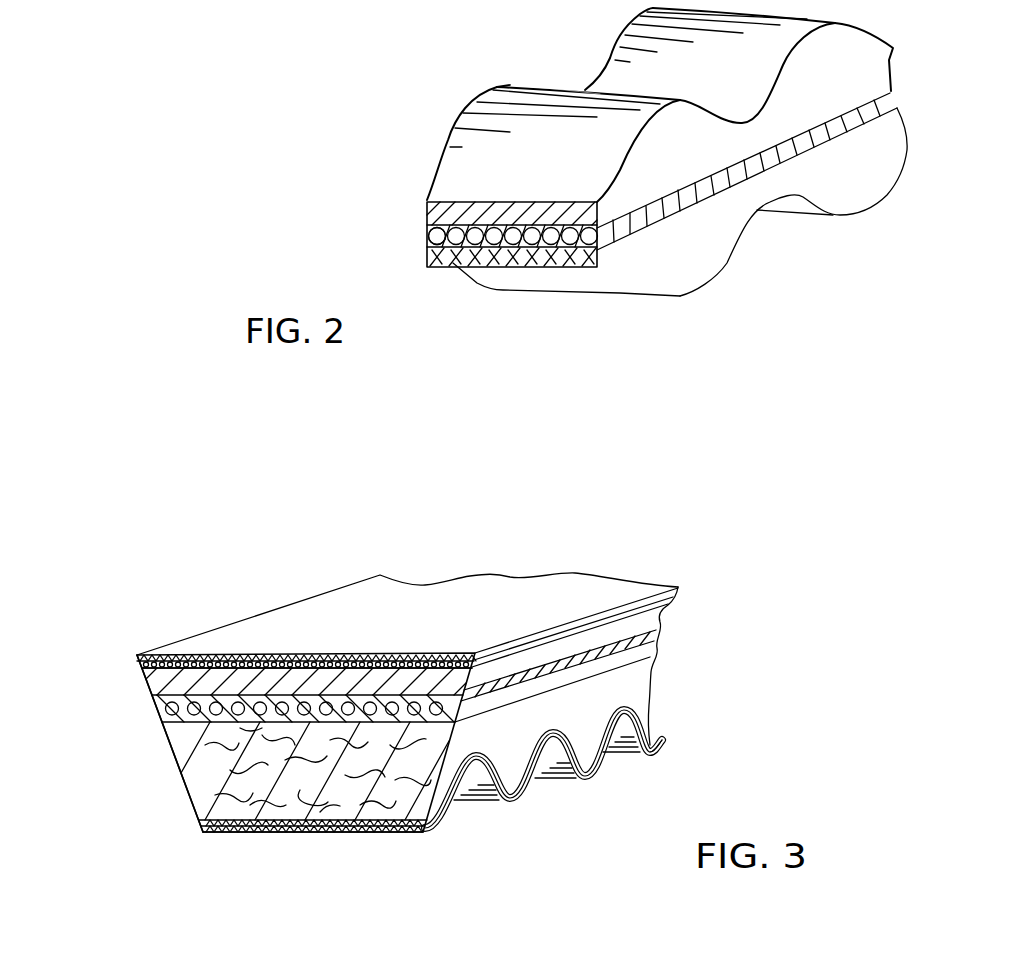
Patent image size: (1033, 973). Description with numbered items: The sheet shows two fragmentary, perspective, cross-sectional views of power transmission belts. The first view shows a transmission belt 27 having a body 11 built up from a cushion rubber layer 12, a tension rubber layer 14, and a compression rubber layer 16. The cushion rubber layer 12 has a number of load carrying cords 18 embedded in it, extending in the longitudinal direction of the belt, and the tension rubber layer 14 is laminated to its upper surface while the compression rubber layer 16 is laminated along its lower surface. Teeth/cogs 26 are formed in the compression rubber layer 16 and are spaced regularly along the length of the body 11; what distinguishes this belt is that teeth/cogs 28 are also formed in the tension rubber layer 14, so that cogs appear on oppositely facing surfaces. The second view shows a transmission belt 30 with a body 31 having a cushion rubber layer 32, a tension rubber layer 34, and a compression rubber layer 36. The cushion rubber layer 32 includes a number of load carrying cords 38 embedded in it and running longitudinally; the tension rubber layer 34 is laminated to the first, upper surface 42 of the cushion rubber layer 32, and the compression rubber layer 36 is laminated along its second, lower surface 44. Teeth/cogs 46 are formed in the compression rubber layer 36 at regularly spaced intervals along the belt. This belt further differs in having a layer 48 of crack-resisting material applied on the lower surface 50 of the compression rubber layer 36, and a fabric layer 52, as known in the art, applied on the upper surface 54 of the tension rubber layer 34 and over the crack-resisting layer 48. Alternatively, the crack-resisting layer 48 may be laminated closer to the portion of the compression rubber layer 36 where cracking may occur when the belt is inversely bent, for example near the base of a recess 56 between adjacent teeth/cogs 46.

In FIG. 2, the body 11 is at (427, 233).
In FIG. 2, the cushion rubber layer 12 is at (452, 236).
In FIG. 2, the tension rubber layer 14 is at (435, 212).
In FIG. 2, the compression rubber layer 16 is at (503, 261).
In FIG. 2, the load carrying cords 18 is at (455, 240).
In FIG. 2, the teeth/cogs 26 is at (680, 277).
In FIG. 2, the transmission belt 27 is at (456, 80).
In FIG. 2, the teeth/cogs 28 is at (647, 153).
In FIG. 3, the transmission belt 30 is at (578, 588).
In FIG. 3, the body 31 is at (148, 713).
In FIG. 3, the cushion rubber layer 32 is at (205, 733).
In FIG. 3, the tension rubber layer 34 is at (190, 682).
In FIG. 3, the compression rubber layer 36 is at (210, 807).
In FIG. 3, the load carrying cords 38 is at (195, 707).
In FIG. 3, the upper surface 42 is at (663, 625).
In FIG. 3, the lower surface 44 is at (652, 670).
In FIG. 3, the teeth/cogs 46 is at (507, 770).
In FIG. 3, the crack-resisting layer 48 is at (250, 820).
In FIG. 3, the lower surface 50 is at (662, 725).
In FIG. 3, the fabric layer 52 is at (327, 660).
In FIG. 3, the upper surface 54 is at (665, 587).
In FIG. 3, the recess 56 is at (472, 803).